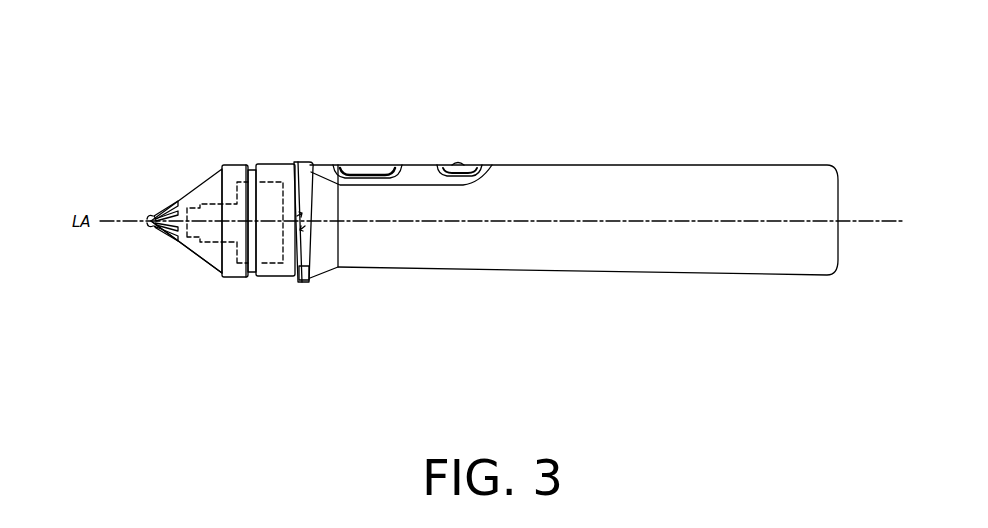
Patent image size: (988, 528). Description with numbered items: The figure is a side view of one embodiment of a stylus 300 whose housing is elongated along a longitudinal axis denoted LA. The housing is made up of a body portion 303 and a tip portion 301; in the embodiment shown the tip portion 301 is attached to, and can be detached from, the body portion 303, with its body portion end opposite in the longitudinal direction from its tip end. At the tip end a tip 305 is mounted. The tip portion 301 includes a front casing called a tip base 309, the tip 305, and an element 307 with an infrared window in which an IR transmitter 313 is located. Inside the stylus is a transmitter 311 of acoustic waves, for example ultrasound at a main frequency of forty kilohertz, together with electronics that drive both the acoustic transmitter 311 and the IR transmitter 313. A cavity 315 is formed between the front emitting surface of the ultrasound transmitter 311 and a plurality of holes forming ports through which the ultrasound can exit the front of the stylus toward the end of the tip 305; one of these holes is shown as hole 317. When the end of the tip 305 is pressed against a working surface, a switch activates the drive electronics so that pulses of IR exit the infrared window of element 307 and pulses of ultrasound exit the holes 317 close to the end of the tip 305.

The stylus 300 is at (505, 76).
The tip portion 301 is at (297, 282).
The body portion 303 is at (827, 282).
The tip 305 is at (150, 218).
The element with infrared window 307 is at (290, 177).
The tip base 309 is at (183, 198).
The transmitter of acoustic waves 311 is at (272, 187).
The transmitter of infrared signals 313 is at (288, 279).
The cavity 315 is at (212, 215).
The hole 317 is at (157, 228).